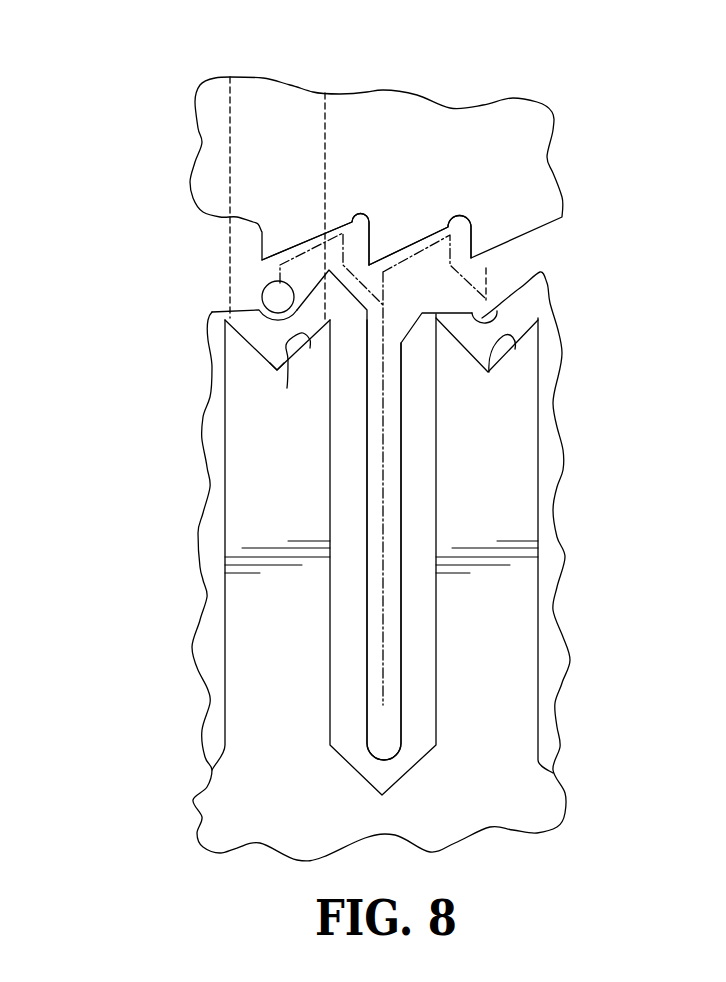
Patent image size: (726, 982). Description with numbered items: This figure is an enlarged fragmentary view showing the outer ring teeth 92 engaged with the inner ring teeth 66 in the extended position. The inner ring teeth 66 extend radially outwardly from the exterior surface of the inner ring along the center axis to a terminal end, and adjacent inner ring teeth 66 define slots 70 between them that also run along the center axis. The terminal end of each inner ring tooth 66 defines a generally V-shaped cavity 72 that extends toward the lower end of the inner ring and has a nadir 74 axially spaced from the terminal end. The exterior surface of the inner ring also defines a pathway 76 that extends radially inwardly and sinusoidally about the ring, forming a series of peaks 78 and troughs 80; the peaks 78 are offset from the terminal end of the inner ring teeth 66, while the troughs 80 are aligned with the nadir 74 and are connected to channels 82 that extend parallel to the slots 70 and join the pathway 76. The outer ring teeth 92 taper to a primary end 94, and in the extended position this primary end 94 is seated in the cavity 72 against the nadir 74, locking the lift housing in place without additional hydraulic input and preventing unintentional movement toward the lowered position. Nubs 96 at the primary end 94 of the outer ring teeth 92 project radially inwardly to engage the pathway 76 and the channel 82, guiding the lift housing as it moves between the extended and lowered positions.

The inner ring teeth 66 is at (260, 695).
The slots 70 is at (352, 758).
The cavity 72 is at (278, 369).
The nadir 74 is at (287, 388).
The pathway 76 is at (460, 233).
The peaks 78 is at (368, 232).
The troughs 80 is at (497, 311).
The channels 82 is at (386, 758).
The outer ring teeth 92 is at (263, 158).
The primary end 94 is at (277, 367).
The nubs 96 is at (278, 297).